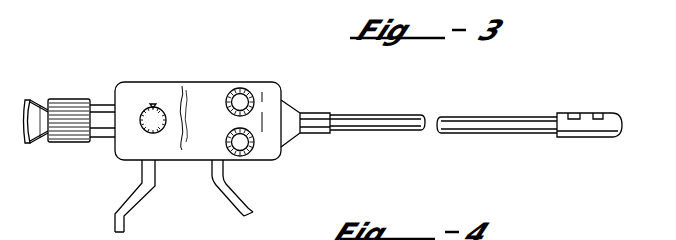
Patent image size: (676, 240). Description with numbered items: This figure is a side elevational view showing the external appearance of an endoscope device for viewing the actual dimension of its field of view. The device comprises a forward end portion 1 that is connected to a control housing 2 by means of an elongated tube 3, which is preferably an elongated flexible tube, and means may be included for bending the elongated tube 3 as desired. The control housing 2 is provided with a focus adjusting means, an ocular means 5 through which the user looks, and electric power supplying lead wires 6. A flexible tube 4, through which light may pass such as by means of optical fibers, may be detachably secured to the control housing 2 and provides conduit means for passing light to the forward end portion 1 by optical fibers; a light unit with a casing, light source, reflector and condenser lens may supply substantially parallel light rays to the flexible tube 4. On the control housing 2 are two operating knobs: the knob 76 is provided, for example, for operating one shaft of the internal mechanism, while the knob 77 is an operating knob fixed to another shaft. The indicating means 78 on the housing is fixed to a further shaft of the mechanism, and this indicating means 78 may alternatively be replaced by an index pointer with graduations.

The forward end portion 1 is at (575, 137).
The control housing 2 is at (163, 81).
The elongated tube 3 is at (510, 118).
The flexible tube 4 is at (245, 200).
The ocular means 5 is at (43, 108).
The electric power supplying lead wires 6 is at (127, 206).
The knob 76 is at (246, 88).
The knob 77 is at (243, 156).
The indicating means 78 is at (147, 134).